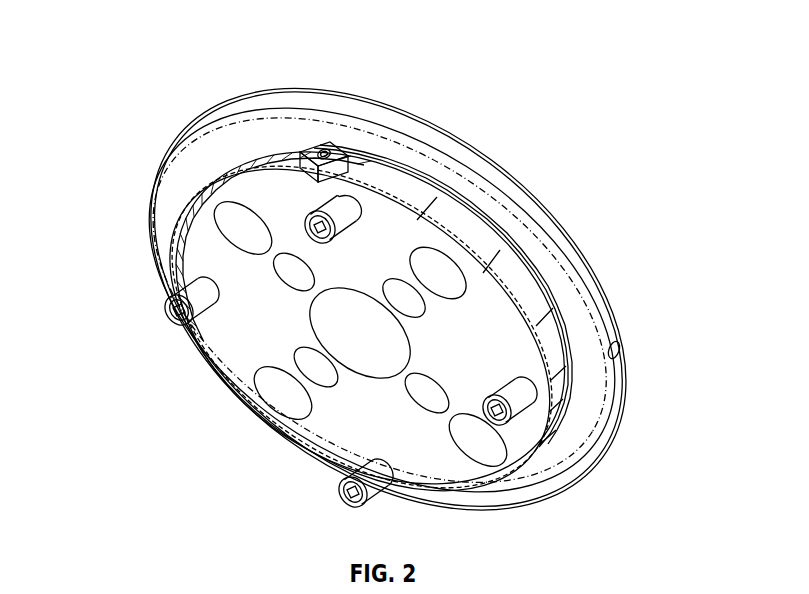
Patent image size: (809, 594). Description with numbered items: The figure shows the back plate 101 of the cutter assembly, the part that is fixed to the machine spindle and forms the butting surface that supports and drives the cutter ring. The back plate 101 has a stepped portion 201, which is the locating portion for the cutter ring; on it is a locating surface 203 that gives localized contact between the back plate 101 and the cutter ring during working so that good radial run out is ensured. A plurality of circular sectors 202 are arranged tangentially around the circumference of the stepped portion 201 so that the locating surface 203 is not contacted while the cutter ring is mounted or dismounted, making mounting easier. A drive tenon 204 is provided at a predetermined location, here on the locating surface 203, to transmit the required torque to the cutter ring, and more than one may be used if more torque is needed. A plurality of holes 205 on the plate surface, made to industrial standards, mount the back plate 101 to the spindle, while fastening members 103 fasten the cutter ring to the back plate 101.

The back plate 101 is at (540, 159).
The fastening members 103 is at (353, 487).
The stepped portion 201 is at (540, 425).
The circular sectors 202 is at (518, 293).
The locating surface 203 is at (548, 351).
The drive tenon 204 is at (315, 159).
The holes 205 is at (293, 267).